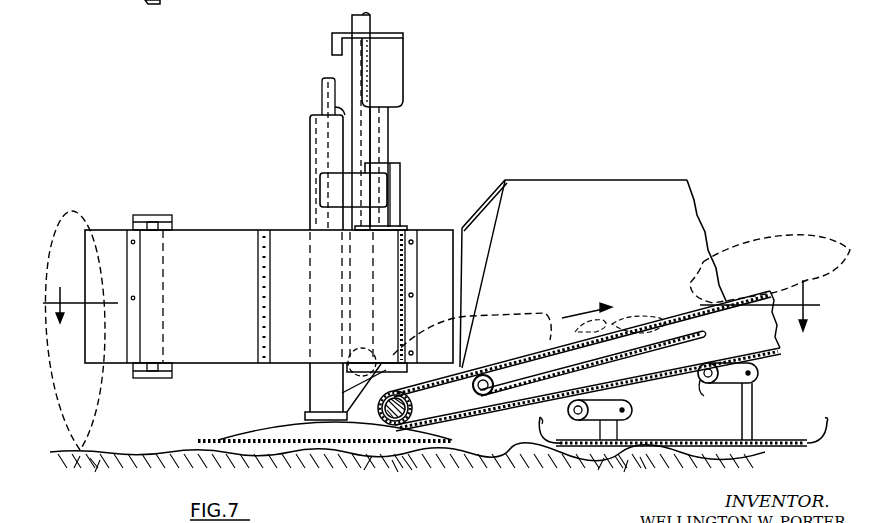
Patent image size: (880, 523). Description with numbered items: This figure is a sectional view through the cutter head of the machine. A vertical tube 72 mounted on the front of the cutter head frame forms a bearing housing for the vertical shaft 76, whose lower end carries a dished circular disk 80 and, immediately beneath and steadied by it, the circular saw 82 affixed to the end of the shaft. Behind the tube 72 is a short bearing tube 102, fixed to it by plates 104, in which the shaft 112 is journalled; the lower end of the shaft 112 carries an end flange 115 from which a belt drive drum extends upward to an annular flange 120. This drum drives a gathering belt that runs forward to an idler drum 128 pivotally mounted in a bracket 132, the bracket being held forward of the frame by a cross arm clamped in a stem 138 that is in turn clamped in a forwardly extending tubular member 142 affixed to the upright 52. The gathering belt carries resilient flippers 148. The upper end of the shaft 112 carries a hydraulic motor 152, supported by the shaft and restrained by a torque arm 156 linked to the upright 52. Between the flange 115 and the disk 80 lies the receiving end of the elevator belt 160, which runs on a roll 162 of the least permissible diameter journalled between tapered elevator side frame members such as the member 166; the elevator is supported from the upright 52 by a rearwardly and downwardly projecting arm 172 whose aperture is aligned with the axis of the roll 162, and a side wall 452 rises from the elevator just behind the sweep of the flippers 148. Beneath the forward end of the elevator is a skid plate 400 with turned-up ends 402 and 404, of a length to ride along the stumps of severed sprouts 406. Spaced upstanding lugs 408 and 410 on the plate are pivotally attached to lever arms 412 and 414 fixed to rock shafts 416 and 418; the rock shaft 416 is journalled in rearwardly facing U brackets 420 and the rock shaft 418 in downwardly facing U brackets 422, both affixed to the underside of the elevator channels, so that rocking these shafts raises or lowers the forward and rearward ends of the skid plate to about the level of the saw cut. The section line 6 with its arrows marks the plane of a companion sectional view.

The upright 52 is at (362, 16).
The torque arm 156 is at (388, 33).
The hydraulic motor 152 is at (396, 69).
The vertical shaft 76 is at (321, 89).
The vertical tube 72 is at (310, 132).
The shaft 112 is at (390, 126).
The plate 104 is at (350, 181).
The short bearing tube 102 is at (401, 173).
The annular flange 120 is at (404, 227).
The flipper 148 is at (433, 236).
The idler drum 128 is at (165, 226).
The bracket 132 is at (134, 376).
The circular saw 82 is at (204, 438).
The dished circular disk 80 is at (265, 430).
The arm 172 is at (362, 382).
The end flange 115 is at (377, 372).
The roll 162 is at (391, 427).
The elevator side frame member 166 is at (477, 402).
The rearwardly facing U bracket 420 is at (568, 401).
The turned up end 402 is at (538, 421).
The rock shaft 416 is at (580, 422).
The lever arm 412 is at (606, 446).
The stumps of severed sprouts 406 is at (688, 476).
The skid plate 400 is at (676, 440).
The upstanding lug 408 is at (630, 426).
The upstanding lug 410 is at (753, 419).
The lever arm 414 is at (753, 371).
The turned up end 404 is at (816, 421).
The side wall 452 is at (578, 192).
The downwardly facing U bracket 422 is at (663, 370).
The rock shaft 418 is at (697, 360).
The elevator belt 160 is at (748, 300).
The section line 6- 6 is at (431, 305).
The stem 138 is at (184, 3).
The forwardly extending tubular member 142 is at (198, 3).